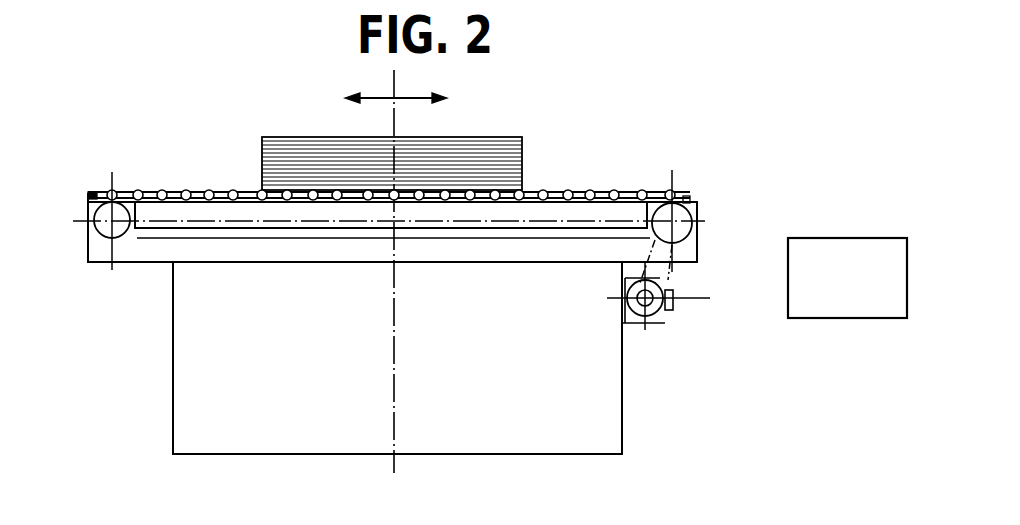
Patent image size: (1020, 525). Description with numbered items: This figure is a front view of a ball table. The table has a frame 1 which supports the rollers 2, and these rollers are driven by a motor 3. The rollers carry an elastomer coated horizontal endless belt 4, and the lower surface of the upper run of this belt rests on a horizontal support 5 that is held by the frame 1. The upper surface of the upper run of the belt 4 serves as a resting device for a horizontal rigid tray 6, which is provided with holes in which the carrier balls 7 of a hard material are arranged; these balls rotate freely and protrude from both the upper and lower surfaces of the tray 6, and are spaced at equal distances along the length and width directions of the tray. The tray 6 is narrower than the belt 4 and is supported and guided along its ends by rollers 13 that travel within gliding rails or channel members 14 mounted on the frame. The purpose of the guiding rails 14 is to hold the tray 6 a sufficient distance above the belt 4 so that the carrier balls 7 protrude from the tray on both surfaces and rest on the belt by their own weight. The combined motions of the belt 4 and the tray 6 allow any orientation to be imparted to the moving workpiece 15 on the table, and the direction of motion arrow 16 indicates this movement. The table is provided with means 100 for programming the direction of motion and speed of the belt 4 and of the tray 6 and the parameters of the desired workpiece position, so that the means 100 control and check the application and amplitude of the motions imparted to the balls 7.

The frame 1 is at (600, 420).
The rollers 2 is at (100, 232).
The motor 3 is at (662, 314).
The endless belt 4 is at (137, 240).
The horizontal support 5 is at (217, 210).
The tray 6 is at (597, 192).
The carrier balls 7 is at (186, 193).
The rollers 13 is at (94, 193).
The gliding rails 14 is at (86, 196).
The workpiece 15 is at (483, 157).
The direction of movement arrow 16 is at (409, 98).
The means 100 is at (676, 290).